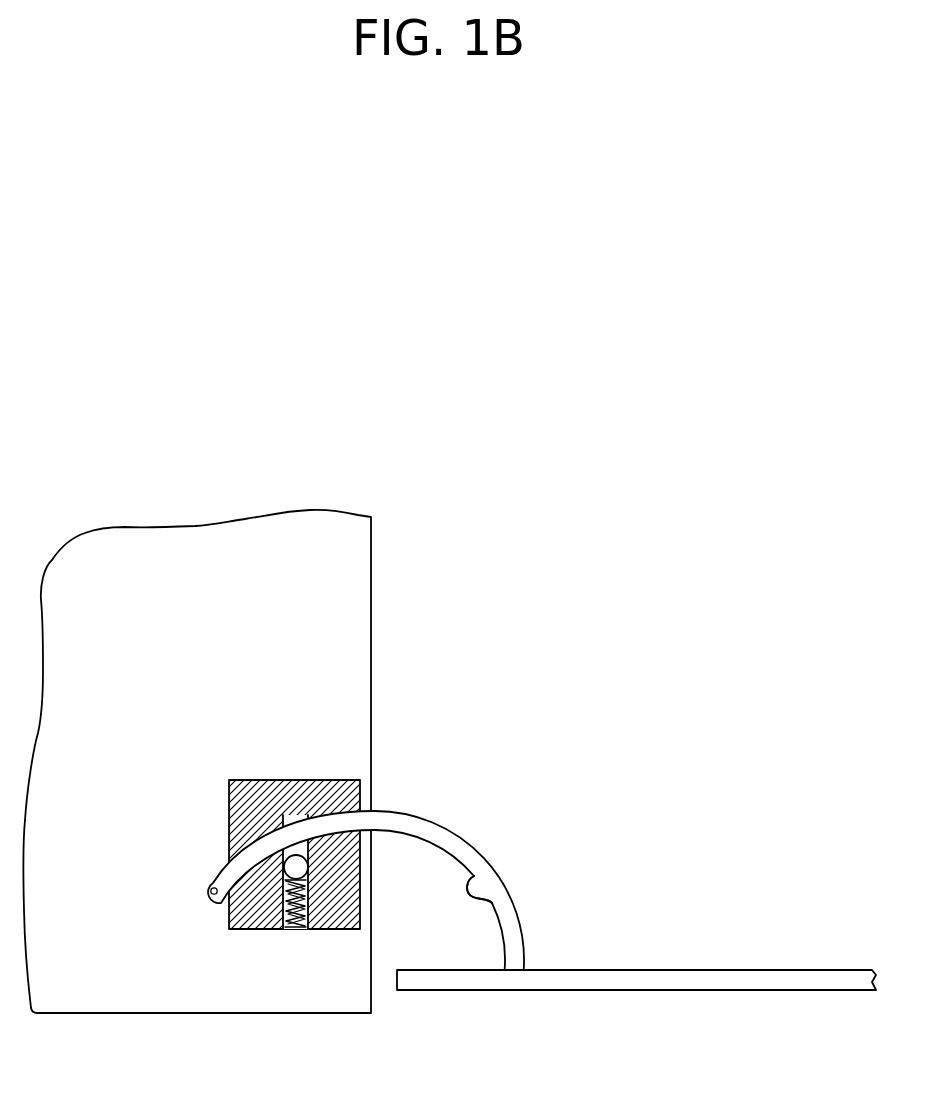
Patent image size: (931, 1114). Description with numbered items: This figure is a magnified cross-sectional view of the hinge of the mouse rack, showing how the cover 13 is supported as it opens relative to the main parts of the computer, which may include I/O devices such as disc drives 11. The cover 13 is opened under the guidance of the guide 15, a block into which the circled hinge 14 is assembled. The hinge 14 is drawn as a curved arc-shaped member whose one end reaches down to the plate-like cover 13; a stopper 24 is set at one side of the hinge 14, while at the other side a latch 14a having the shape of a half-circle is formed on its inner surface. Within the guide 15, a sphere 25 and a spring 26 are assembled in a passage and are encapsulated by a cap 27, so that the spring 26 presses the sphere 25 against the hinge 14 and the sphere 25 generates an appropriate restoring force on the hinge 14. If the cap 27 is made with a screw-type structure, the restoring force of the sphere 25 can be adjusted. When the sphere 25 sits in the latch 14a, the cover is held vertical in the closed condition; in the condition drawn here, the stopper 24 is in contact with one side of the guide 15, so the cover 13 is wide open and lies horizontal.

The disc drive 11 is at (348, 725).
The cover 13 is at (612, 979).
The circled hinge 14 is at (480, 868).
The latch 14a is at (482, 891).
The guide 15 is at (300, 795).
The stopper 24 is at (210, 889).
The sphere 25 is at (235, 838).
The spring 26 is at (278, 898).
The cap 27 is at (303, 922).